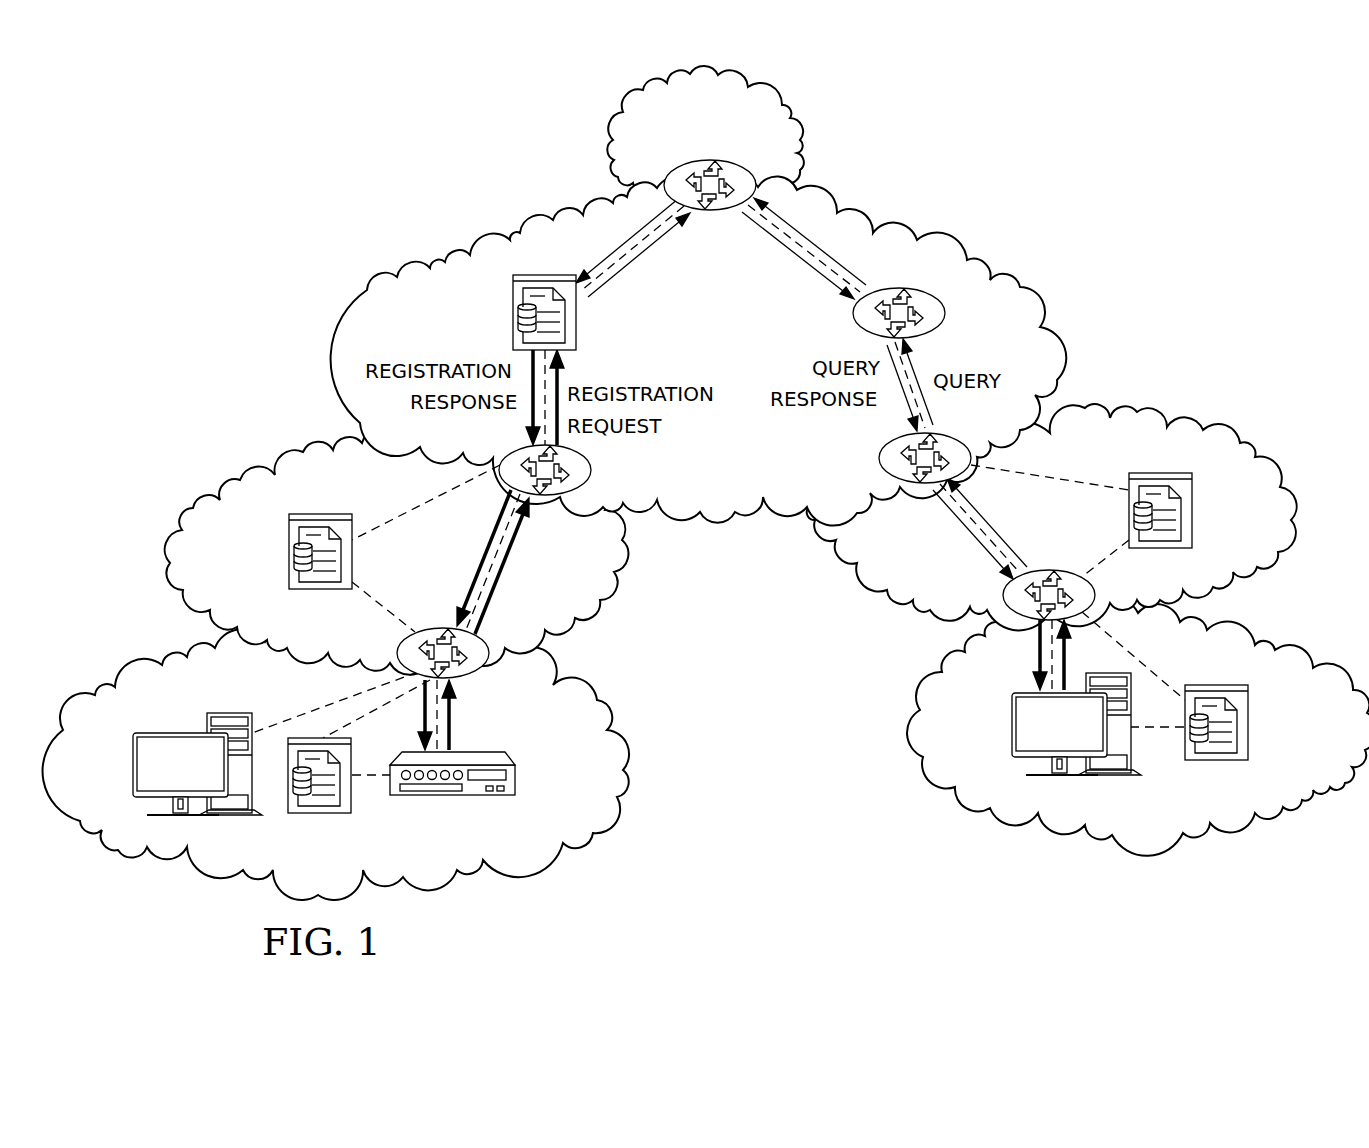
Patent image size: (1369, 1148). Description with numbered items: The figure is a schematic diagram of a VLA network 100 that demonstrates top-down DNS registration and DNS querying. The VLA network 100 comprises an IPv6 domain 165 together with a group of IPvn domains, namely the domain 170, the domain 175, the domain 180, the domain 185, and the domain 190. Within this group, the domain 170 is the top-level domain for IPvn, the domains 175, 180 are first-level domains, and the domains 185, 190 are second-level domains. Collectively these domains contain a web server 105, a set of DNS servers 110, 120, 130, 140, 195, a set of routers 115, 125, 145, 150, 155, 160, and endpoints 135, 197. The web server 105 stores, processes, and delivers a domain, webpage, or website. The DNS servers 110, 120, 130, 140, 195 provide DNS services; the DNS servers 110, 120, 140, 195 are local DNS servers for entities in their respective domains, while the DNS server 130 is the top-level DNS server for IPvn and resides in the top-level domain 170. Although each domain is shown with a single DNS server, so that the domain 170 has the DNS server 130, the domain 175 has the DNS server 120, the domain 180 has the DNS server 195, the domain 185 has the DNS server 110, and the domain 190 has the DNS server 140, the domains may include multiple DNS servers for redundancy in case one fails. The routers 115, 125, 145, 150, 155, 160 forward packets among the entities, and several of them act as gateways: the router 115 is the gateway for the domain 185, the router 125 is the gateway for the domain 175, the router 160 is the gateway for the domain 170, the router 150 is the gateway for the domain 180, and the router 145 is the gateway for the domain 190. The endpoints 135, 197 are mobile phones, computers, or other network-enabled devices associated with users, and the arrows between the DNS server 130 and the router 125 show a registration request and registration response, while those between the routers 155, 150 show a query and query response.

The VLA network 100 is at (198, 134).
The web server 105 is at (515, 784).
The DNS server 110 is at (321, 814).
The router 115 is at (470, 684).
The DNS server 120 is at (289, 553).
The router 125 is at (592, 472).
The DNS server 130 is at (513, 315).
The endpoint 135 is at (1012, 730).
The DNS server 140 is at (1248, 732).
The router 145 is at (1003, 592).
The router 150 is at (879, 462).
The router 155 is at (946, 313).
The router 160 is at (701, 162).
The IPv6 domain 165 is at (632, 87).
The domain 170 is at (478, 239).
The domain 175 is at (304, 448).
The domain 180 is at (1145, 402).
The domain 185 is at (116, 860).
The domain 190 is at (1302, 813).
The DNS server 195 is at (1193, 510).
The endpoint 197 is at (133, 770).